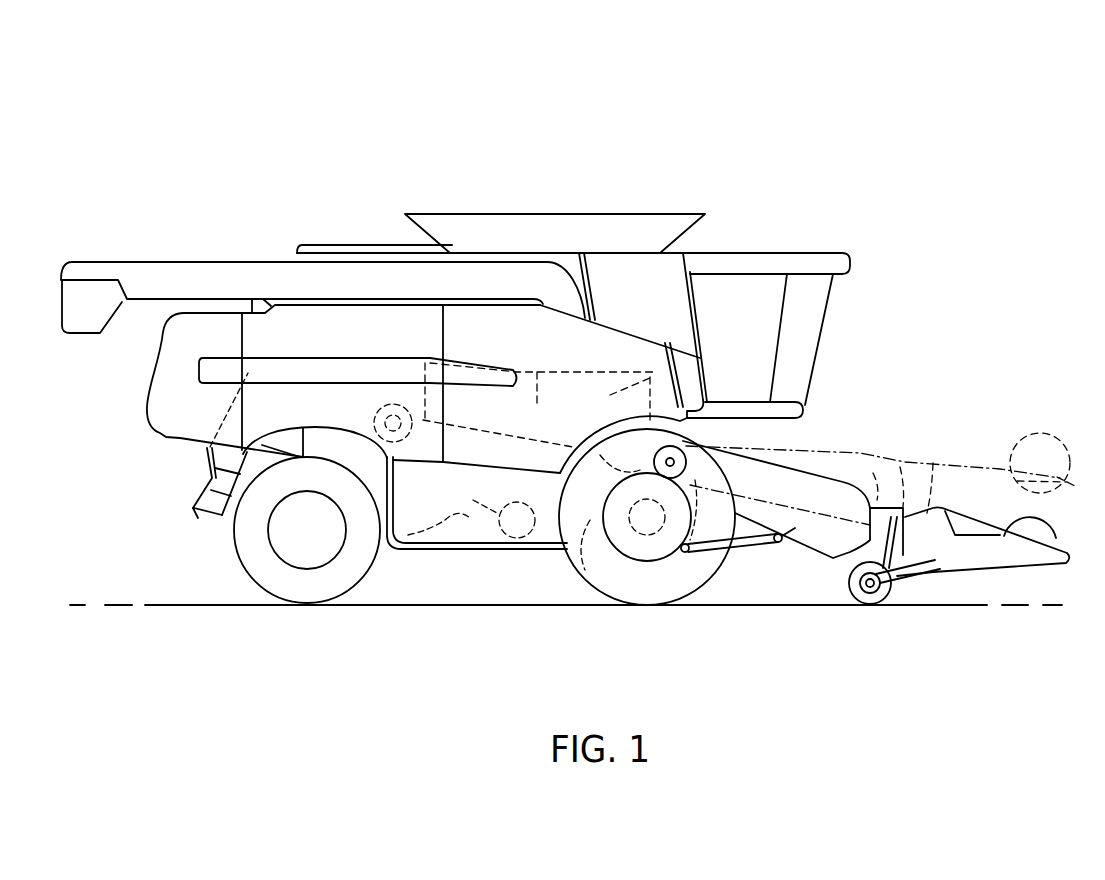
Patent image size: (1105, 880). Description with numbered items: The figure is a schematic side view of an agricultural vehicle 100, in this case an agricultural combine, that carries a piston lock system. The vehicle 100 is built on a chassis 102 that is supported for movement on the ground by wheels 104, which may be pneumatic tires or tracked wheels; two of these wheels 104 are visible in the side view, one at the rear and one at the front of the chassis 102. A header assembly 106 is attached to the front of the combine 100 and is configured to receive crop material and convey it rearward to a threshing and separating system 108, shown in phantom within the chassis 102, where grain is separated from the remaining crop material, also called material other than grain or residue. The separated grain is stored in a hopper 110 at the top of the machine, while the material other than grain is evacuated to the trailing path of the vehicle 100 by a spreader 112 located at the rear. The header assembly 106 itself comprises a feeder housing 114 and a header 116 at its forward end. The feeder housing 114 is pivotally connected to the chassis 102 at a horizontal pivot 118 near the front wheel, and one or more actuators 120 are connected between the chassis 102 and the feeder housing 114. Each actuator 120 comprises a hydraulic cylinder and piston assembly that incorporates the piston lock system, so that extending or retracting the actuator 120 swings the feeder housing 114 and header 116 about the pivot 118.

The agricultural vehicle 100 is at (446, 170).
The chassis 102 is at (460, 517).
The wheels 104 is at (307, 583).
The header assembly 106 is at (963, 453).
The threshing and separating system 108 is at (538, 372).
The hopper 110 is at (632, 228).
The spreader 112 is at (213, 503).
The feeder housing 114 is at (822, 502).
The header 116 is at (960, 548).
The horizontal pivot 118 is at (685, 453).
The actuator 120 is at (738, 547).